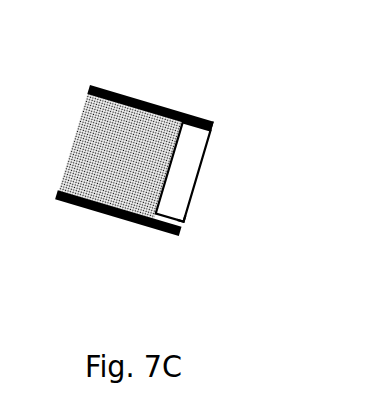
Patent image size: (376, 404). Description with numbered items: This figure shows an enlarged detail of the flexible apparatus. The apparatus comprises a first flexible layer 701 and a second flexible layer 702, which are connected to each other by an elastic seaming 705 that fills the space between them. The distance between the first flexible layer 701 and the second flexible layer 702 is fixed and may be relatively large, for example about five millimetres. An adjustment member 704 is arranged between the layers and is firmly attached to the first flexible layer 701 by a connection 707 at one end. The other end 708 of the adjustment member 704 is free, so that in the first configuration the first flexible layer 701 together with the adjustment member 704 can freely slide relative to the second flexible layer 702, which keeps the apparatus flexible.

The first flexible layer 701 is at (130, 96).
The second flexible layer 702 is at (74, 204).
The adjustment member 704 is at (206, 162).
The elastic seaming 705 is at (137, 203).
The connection 707 is at (216, 127).
The other end 708 is at (188, 223).